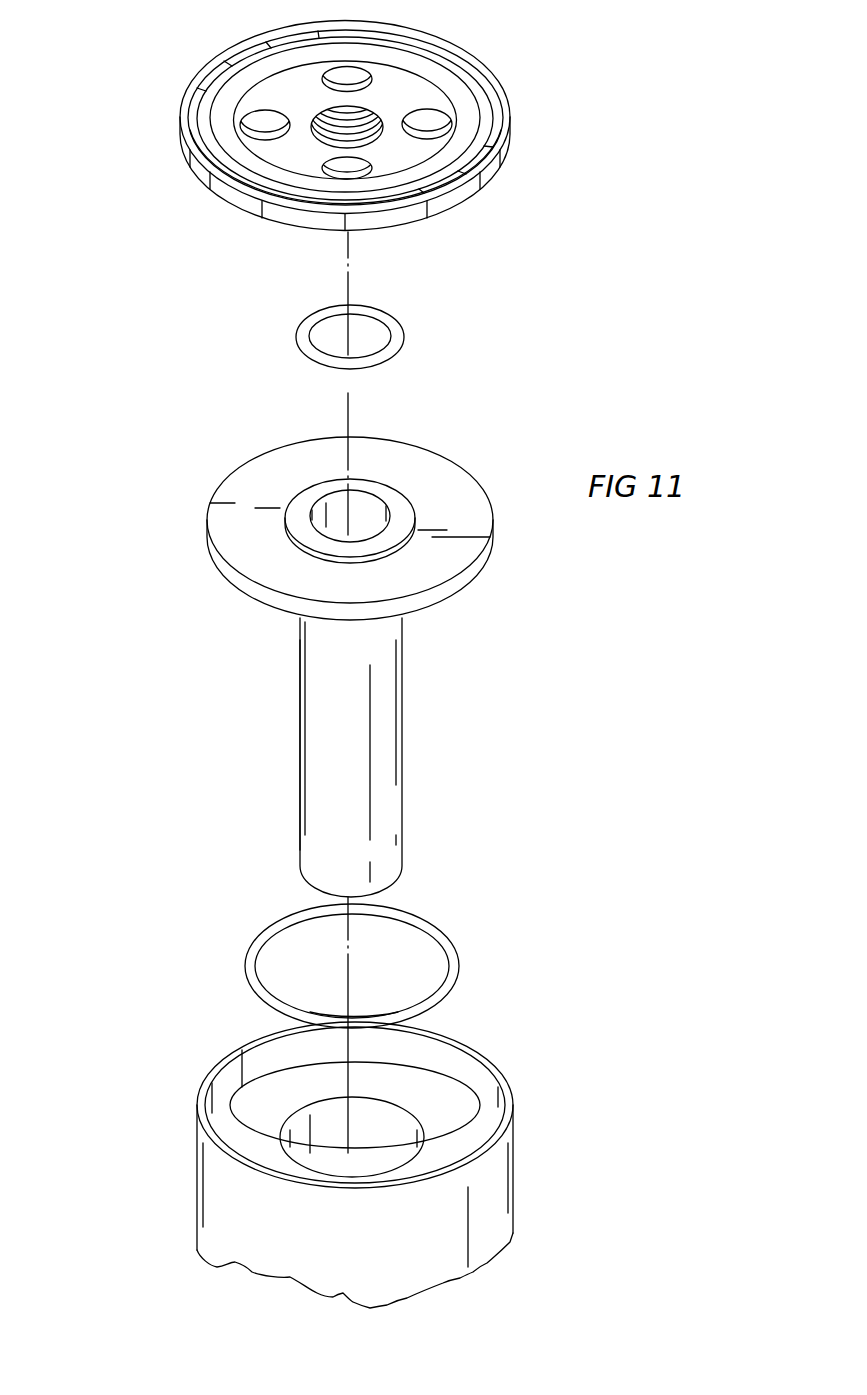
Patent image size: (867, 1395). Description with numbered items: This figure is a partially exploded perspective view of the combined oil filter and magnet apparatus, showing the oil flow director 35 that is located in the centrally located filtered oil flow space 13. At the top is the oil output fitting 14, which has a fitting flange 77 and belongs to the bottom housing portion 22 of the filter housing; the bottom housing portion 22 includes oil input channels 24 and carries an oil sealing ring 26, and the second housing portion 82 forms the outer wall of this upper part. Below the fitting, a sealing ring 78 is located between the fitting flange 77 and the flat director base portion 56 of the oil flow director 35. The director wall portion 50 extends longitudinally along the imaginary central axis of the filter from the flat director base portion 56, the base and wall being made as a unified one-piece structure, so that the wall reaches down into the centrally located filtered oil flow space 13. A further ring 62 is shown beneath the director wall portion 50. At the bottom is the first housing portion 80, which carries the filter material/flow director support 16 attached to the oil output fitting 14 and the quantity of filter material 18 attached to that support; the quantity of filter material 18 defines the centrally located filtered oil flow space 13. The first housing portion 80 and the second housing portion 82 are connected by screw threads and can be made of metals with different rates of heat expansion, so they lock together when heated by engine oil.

The centrally located filtered oil flow space 13 is at (335, 1150).
The oil output fitting 14 is at (322, 122).
The filter material/flow director support 16 is at (420, 525).
The quantity of filter material 18 is at (405, 1085).
The bottom housing portion 22 is at (463, 172).
The oil input channels 24 is at (427, 118).
The oil sealing ring 26 is at (467, 118).
The oil flow director 35 is at (408, 755).
The director wall portion 50 is at (390, 659).
The flat director base portion 56 is at (390, 503).
The sealing ring 62 is at (435, 930).
The fitting flange 77 is at (410, 90).
The sealing ring 78 is at (397, 333).
The first housing portion 80 is at (498, 1197).
The second housing portion 82 is at (247, 203).